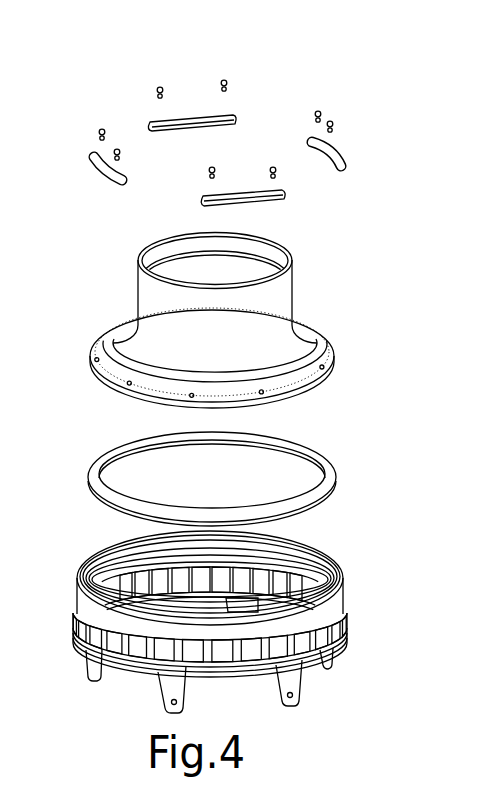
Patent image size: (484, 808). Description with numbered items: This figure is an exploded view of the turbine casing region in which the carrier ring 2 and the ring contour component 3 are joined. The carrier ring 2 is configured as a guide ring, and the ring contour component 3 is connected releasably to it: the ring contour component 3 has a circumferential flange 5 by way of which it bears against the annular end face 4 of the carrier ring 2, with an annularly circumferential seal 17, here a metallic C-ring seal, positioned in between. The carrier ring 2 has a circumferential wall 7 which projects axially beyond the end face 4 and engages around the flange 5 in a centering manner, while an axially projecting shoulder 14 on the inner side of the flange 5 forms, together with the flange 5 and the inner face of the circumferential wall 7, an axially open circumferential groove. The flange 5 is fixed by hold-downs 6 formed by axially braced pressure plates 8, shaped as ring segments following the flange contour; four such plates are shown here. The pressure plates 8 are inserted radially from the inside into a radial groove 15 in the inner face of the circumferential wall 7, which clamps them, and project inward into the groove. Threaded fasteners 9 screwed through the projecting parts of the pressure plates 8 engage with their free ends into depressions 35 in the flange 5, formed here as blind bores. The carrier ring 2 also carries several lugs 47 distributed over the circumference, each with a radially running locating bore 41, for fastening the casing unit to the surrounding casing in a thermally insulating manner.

The carrier ring 2 is at (206, 639).
The ring contour component 3 is at (150, 300).
The annular end face 4 is at (90, 570).
The circumferential flange 5 is at (93, 370).
The hold-down 6 is at (86, 183).
The circumferential wall 7 is at (345, 598).
The pressure plate 8 is at (95, 182).
The threaded fastener 9 is at (160, 86).
The axially projecting shoulder 14 is at (307, 365).
The radial groove 15 is at (305, 555).
The seal 17 is at (93, 481).
The depression 35 is at (93, 352).
The locating bore 41 is at (300, 705).
The lug 47 is at (234, 712).